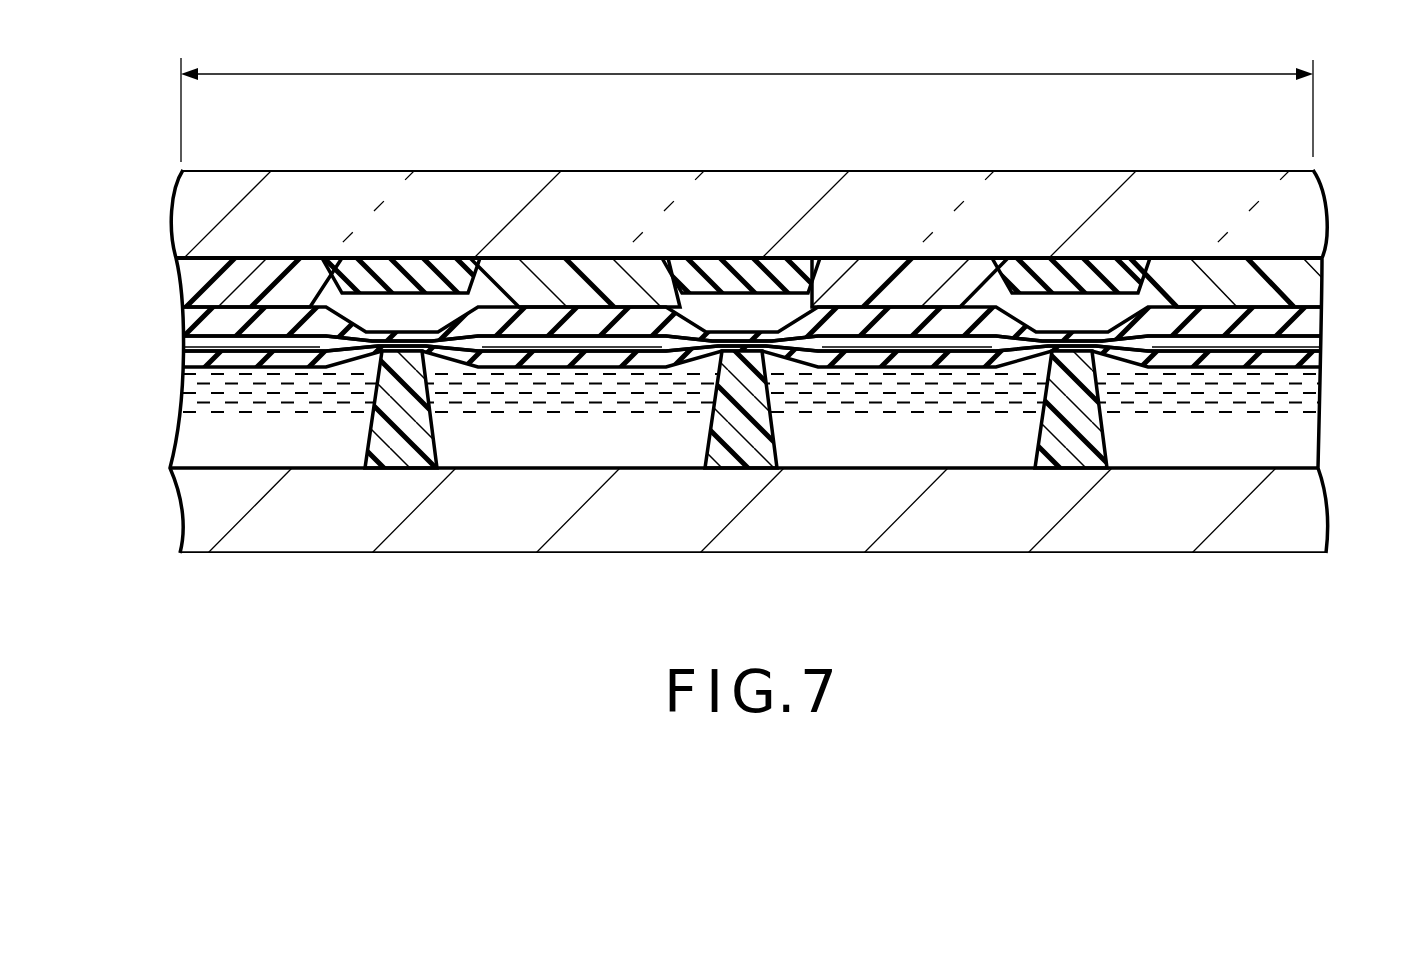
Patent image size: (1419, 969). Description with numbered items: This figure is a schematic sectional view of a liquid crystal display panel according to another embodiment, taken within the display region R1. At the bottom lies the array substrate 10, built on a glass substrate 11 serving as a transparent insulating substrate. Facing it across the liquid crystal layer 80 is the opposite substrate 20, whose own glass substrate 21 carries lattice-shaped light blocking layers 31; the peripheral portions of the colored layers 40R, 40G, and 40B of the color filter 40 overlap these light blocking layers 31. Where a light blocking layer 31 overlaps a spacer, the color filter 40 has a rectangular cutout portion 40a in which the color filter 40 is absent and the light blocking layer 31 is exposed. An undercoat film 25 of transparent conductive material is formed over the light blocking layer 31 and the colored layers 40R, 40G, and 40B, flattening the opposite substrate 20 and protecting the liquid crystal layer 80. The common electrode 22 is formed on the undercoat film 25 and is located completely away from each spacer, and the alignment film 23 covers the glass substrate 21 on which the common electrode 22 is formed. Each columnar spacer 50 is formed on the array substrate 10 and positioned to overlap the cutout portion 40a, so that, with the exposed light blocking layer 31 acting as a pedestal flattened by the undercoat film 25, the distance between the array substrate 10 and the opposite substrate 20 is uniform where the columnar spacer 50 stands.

The array substrate 10 is at (145, 508).
The glass substrate 11 is at (1320, 520).
The opposite substrate 20 is at (135, 226).
The glass substrate 21 is at (1322, 224).
The common electrode 22 is at (185, 345).
The alignment film 23 is at (185, 357).
The undercoat film 25 is at (185, 322).
The light blocking layer 31 is at (452, 260).
The color filter 40 is at (517, 244).
The cutout portion 40a is at (342, 325).
The colored layer 40B is at (260, 272).
The colored layer 40R is at (592, 275).
The colored layer 40G is at (897, 275).
The columnar spacer 50 is at (425, 432).
The liquid crystal layer 80 is at (188, 420).
The display region R1 is at (747, 98).